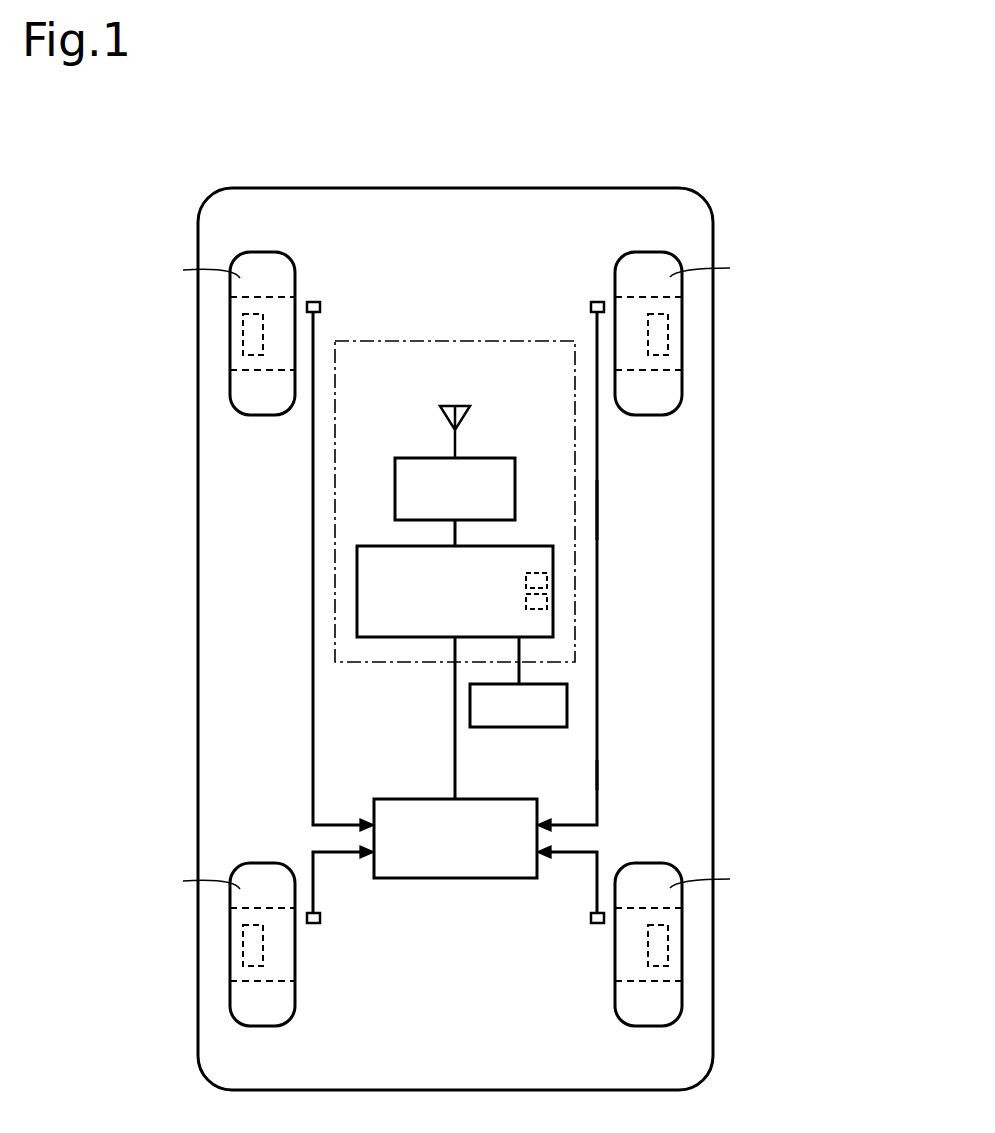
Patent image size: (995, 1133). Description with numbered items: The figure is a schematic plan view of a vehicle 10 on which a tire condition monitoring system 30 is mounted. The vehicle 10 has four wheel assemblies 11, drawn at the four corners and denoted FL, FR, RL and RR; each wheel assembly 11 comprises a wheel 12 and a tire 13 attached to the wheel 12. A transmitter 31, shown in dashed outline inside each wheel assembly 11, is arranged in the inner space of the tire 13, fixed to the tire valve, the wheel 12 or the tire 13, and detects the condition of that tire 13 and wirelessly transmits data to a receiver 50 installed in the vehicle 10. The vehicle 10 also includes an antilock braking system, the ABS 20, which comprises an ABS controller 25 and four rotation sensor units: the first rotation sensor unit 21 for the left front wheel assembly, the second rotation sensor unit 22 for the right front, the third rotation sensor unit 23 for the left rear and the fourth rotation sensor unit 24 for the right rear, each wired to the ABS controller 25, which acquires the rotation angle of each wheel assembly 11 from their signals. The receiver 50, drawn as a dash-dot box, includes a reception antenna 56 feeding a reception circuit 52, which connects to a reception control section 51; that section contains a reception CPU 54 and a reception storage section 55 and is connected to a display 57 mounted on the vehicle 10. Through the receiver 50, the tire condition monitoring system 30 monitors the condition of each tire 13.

The vehicle 10 is at (723, 171).
The wheel assembly 11 is at (150, 257).
The wheel 12 is at (672, 904).
The tire 13 is at (457, 573).
The transmitter 31 is at (668, 945).
The antilock braking system (ABS) 20 is at (607, 503).
The first rotation sensor unit 21 is at (313, 302).
The second rotation sensor unit 22 is at (597, 302).
The third rotation sensor unit 23 is at (317, 923).
The fourth rotation sensor unit 24 is at (595, 923).
The ABS controller 25 is at (460, 878).
The tire condition monitoring system 30 is at (623, 754).
The receiver 50 is at (345, 663).
The reception control section 51 is at (487, 545).
The reception circuit 52 is at (472, 457).
The reception CPU 54 is at (547, 580).
The reception storage section 55 is at (547, 601).
The reception antenna 56 is at (468, 404).
The display 57 is at (537, 727).